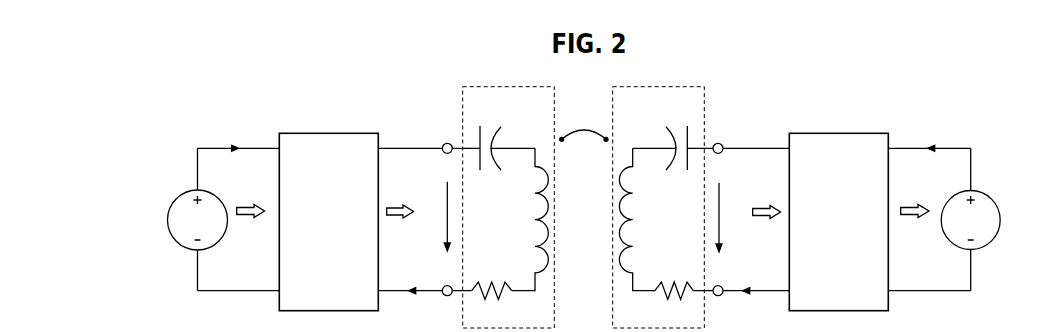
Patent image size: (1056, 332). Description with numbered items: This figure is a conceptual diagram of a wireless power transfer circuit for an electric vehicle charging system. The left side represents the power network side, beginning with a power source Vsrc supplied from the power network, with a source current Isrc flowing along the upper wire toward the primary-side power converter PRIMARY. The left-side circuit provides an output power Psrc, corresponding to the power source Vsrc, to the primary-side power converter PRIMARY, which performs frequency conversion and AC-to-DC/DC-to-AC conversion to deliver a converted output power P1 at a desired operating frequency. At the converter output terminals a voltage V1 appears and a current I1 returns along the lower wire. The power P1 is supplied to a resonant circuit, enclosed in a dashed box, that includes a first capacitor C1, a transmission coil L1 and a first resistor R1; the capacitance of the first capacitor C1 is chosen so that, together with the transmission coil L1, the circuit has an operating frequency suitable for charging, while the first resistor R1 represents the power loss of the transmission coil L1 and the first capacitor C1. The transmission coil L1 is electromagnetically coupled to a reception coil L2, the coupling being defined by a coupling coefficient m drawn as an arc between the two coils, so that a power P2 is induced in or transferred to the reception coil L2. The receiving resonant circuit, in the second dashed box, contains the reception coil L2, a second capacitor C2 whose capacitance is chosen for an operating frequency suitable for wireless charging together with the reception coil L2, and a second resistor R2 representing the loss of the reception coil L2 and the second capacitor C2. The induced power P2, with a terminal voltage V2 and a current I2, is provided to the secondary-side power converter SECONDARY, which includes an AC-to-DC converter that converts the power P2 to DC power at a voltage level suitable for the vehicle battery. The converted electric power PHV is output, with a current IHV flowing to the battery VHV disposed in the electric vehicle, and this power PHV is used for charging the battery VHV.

The power source Vsrc is at (181, 220).
The source current Isrc is at (238, 138).
The output power Psrc is at (251, 200).
The primary-side power converter PRIMARY is at (328, 221).
The output power P1 is at (400, 200).
The primary side voltage V1 is at (440, 216).
The primary side current I1 is at (415, 281).
The first capacitor C1 is at (507, 137).
The transmission coil L1 is at (530, 219).
The first resistor R1 is at (492, 278).
The coupling coefficient m is at (584, 126).
The second capacitor C2 is at (660, 137).
The reception coil L2 is at (637, 219).
The second resistor R2 is at (674, 278).
The secondary side voltage V2 is at (727, 217).
The power P2 is at (767, 201).
The secondary side current I2 is at (747, 281).
The secondary-side power converter SECONDARY is at (838, 221).
The electric power PHV is at (913, 200).
The high-voltage side current IHV is at (931, 138).
The battery VHV is at (988, 220).